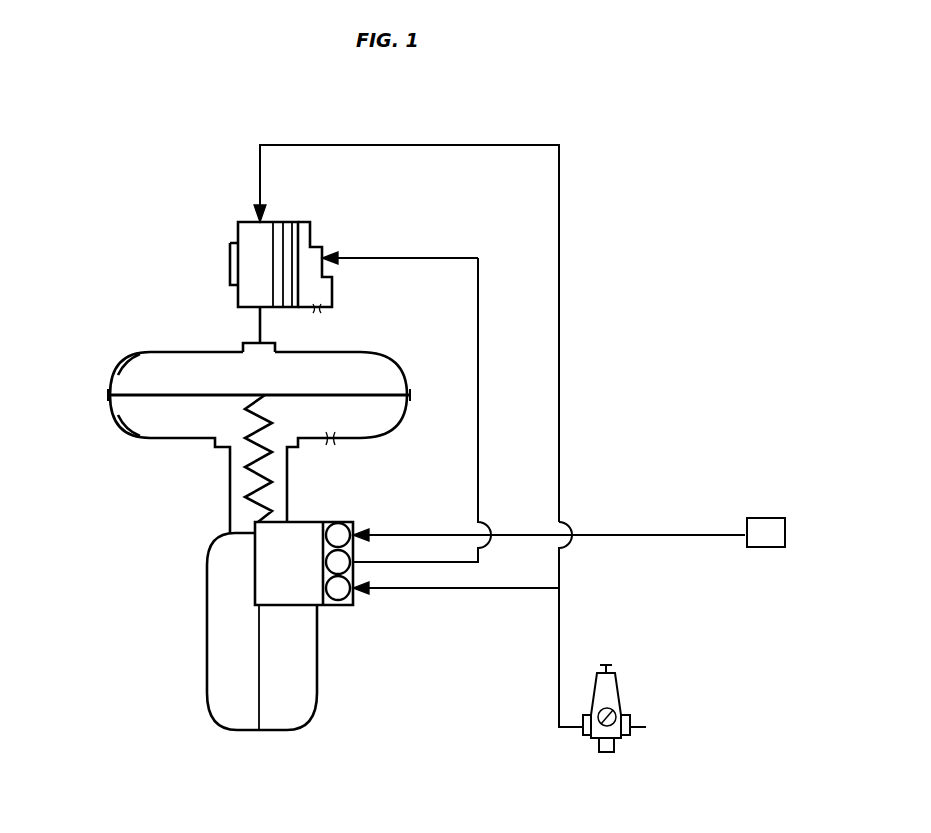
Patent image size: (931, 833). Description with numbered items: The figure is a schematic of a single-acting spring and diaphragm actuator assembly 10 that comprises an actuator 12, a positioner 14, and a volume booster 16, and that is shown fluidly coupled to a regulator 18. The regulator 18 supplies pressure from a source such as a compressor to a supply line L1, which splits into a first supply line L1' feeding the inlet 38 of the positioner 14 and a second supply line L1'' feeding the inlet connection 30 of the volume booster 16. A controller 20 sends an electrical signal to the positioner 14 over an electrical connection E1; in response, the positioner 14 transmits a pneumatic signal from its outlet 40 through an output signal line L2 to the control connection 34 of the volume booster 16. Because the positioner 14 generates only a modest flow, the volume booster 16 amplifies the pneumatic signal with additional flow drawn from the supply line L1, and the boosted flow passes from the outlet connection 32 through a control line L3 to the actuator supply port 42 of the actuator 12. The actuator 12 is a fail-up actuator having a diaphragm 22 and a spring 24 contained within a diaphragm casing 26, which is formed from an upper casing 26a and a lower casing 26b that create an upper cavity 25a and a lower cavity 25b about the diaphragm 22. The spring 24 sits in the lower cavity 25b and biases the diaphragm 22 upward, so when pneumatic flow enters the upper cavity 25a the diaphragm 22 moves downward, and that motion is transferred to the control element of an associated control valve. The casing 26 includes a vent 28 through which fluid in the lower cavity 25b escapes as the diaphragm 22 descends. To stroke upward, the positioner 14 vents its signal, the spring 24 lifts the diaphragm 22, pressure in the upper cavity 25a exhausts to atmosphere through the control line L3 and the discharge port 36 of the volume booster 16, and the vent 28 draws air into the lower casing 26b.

The actuator assembly 10 is at (108, 195).
The actuator 12 is at (198, 573).
The positioner 14 is at (356, 612).
The volume booster 16 is at (232, 219).
The regulator 18 is at (618, 685).
The controller 20 is at (766, 548).
The diaphragm 22 is at (155, 392).
The spring 24 is at (253, 468).
The upper cavity 25a is at (368, 384).
The lower cavity 25b is at (368, 425).
The diaphragm casing 26 is at (100, 395).
The upper casing 26a is at (120, 366).
The lower casing 26b is at (123, 421).
The vent 28 is at (331, 444).
The inlet connection 30 is at (258, 220).
The outlet connection 32 is at (258, 311).
The control connection 34 is at (322, 248).
The discharge port 36 is at (316, 314).
The inlet 38 is at (355, 590).
The outlet 40 is at (355, 560).
The actuator supply port 42 is at (275, 345).
The supply line L1 is at (580, 657).
The first supply line L1' is at (456, 604).
The second supply line L1'' is at (585, 517).
The output signal line L2 is at (480, 458).
The control line L3 is at (258, 328).
The electrical connection E1 is at (648, 533).